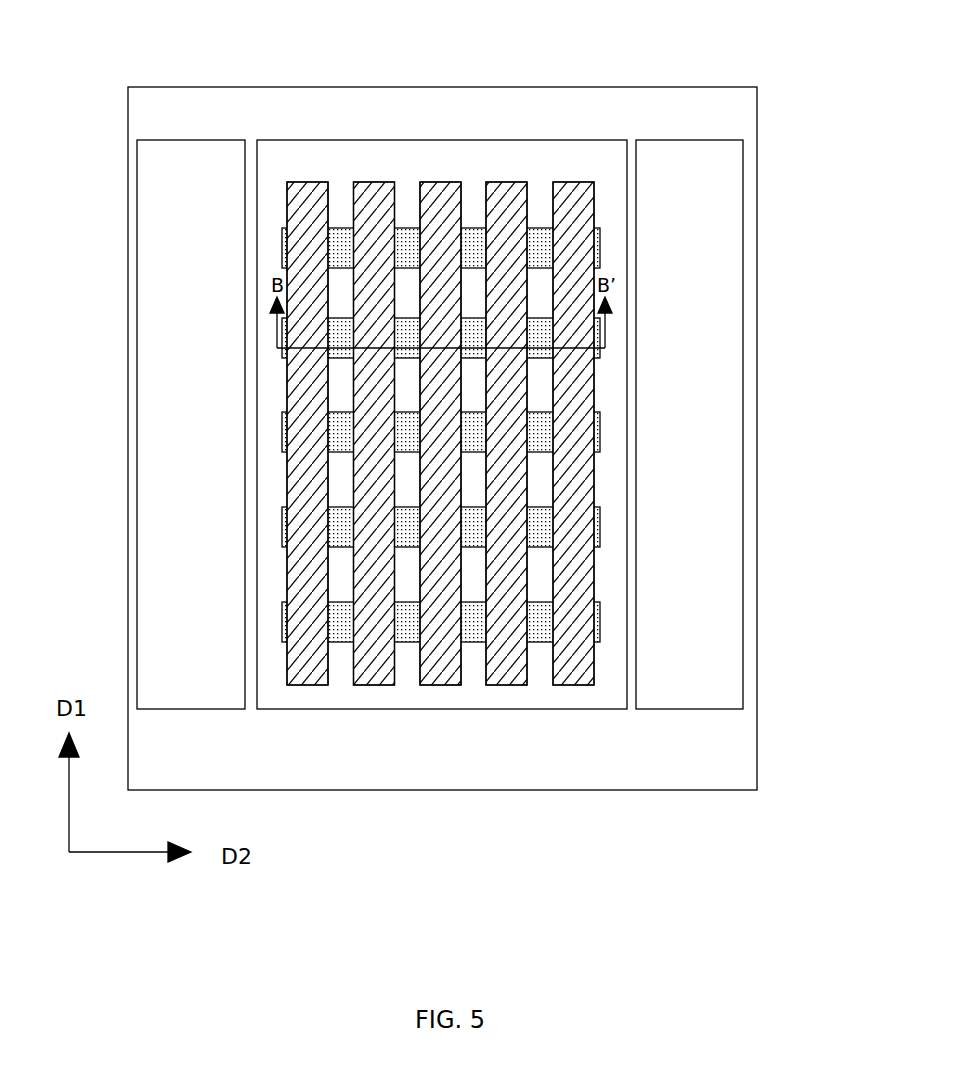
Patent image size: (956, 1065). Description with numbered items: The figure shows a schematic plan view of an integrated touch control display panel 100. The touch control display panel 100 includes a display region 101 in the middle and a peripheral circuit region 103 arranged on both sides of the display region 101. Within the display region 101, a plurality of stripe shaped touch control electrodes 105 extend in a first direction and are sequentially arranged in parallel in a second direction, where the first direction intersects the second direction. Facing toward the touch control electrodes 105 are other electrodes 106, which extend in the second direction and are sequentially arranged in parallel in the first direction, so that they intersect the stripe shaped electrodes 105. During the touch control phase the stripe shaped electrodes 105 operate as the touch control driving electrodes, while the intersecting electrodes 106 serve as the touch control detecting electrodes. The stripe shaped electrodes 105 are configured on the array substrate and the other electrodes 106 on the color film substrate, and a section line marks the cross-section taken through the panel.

The touch control display panel 100 is at (90, 72).
The display region 101 is at (602, 378).
The peripheral circuit region 103 is at (708, 265).
The touch control electrodes 105 is at (582, 483).
The electrodes 106 is at (595, 527).